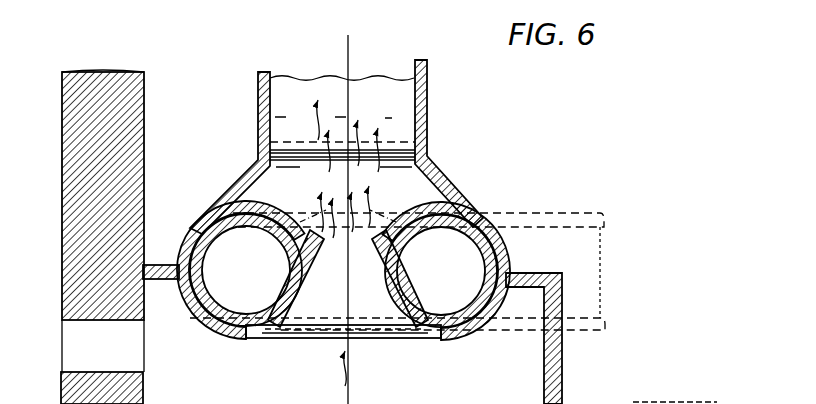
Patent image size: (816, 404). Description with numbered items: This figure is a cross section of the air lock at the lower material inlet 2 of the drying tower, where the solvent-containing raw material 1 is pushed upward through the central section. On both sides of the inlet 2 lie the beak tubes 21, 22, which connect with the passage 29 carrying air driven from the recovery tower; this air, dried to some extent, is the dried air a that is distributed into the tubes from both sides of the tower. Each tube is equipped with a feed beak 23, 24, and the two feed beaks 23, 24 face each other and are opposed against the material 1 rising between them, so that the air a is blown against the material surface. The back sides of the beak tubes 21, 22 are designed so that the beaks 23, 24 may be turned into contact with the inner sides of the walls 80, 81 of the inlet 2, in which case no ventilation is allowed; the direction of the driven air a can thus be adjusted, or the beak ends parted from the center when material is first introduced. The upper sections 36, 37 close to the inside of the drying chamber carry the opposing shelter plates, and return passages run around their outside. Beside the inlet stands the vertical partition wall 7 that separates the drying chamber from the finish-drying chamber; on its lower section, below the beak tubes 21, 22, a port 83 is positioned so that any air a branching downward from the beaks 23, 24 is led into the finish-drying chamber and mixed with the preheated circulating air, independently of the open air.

The raw material 1 is at (348, 380).
The material inlet 2 is at (298, 338).
The partition wall 7 is at (76, 178).
The beak tube 21 is at (201, 302).
The beak tube 22 is at (470, 331).
The feed beak 23 is at (319, 247).
The feed beak 24 is at (366, 247).
The passage 29 is at (543, 213).
The upper section 36 is at (258, 98).
The upper section 37 is at (427, 88).
The inlet wall 80 is at (200, 215).
The inlet wall 81 is at (509, 252).
The port 83 is at (68, 372).
The dried air a is at (346, 169).